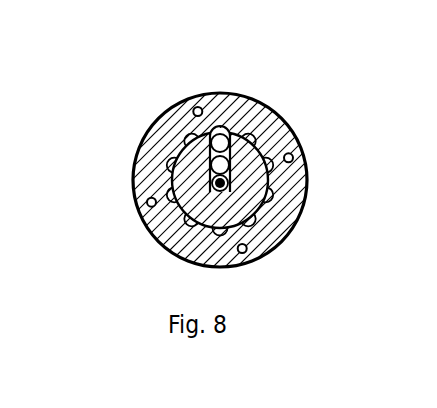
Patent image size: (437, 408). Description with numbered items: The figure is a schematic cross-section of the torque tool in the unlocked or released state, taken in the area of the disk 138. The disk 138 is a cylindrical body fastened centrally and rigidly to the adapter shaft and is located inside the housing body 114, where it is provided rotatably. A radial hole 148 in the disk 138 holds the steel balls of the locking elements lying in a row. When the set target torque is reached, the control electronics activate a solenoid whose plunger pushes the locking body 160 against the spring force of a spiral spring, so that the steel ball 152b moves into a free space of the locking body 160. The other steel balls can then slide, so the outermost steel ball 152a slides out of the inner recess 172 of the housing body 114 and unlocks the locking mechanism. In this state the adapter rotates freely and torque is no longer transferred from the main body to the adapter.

The housing body 114 is at (218, 180).
The disk 138 is at (216, 180).
The radial hole 148 is at (293, 135).
The outermost steel ball 152a is at (168, 89).
The steel ball 152b is at (155, 122).
The locking body 160 is at (139, 155).
The inner recess 172 is at (161, 218).